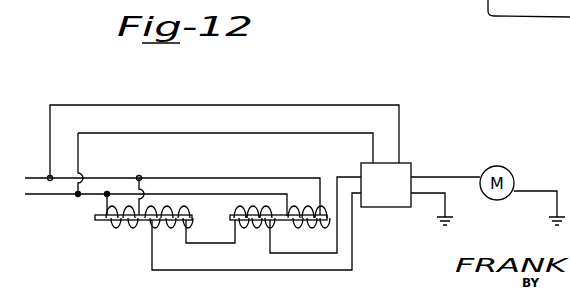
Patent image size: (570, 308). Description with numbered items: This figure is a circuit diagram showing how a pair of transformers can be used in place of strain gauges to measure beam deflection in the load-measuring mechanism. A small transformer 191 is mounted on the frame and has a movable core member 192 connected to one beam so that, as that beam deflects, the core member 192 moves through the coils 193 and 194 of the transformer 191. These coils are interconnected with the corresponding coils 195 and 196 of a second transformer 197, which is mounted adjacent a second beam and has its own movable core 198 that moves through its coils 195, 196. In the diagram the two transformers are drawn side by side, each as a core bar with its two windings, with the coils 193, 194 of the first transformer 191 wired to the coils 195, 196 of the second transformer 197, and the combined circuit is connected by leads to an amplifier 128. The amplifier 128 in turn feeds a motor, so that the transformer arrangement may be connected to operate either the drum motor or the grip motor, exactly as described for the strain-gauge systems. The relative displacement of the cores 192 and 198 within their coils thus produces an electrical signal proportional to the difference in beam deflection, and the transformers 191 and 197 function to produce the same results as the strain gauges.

The amplifier 128 is at (411, 163).
The small transformer 191 is at (306, 225).
The movable core member 192 is at (231, 217).
The coil 193 is at (262, 207).
The coil 194 is at (304, 223).
The coil 195 is at (127, 226).
The coil 196 is at (182, 213).
The second transformer 197 is at (110, 219).
The movable core 198 is at (95, 219).